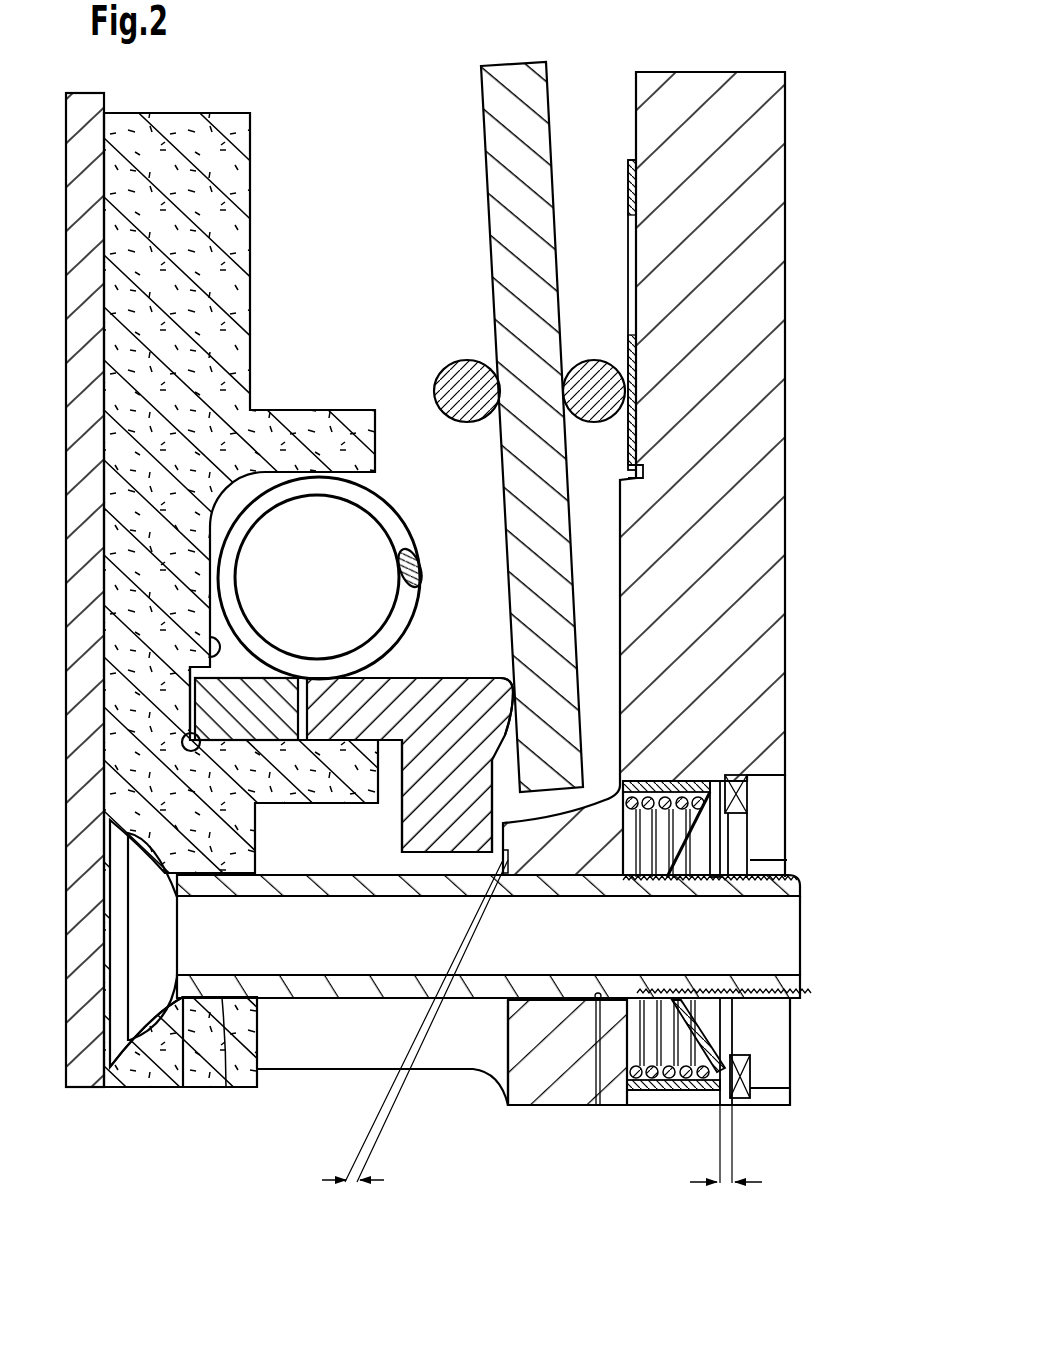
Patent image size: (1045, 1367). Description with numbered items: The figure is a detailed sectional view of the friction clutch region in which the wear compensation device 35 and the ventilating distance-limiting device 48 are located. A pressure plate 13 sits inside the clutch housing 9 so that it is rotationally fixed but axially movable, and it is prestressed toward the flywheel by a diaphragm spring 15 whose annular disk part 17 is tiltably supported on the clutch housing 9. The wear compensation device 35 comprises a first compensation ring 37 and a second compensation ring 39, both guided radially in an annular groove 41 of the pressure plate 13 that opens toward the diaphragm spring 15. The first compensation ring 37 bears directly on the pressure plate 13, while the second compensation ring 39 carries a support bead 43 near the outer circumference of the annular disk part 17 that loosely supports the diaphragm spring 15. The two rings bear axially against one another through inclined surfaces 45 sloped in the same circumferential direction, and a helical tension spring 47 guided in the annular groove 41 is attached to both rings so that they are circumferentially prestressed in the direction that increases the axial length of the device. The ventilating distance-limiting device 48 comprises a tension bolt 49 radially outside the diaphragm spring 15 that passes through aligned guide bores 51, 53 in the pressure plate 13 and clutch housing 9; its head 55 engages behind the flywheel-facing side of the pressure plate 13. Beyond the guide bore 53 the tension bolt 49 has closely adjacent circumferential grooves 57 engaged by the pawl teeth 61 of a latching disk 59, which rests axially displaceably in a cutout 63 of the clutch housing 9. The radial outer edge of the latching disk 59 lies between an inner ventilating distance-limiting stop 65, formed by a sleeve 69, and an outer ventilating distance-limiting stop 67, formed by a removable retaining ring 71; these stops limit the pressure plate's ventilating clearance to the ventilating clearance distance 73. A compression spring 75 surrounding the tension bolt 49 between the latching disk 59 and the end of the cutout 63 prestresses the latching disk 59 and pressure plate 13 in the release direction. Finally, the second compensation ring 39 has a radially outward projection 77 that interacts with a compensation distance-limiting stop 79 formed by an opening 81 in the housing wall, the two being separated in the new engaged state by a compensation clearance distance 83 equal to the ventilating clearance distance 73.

The clutch housing 9 is at (768, 302).
The pressure plate 13 is at (240, 195).
The diaphragm spring 15 is at (452, 284).
The annular disk part 17 is at (527, 581).
The wear compensation device 35 is at (438, 542).
The first compensation ring 37 is at (243, 698).
The second compensation ring 39 is at (442, 702).
The annular groove 41 is at (210, 630).
The support bead 43 is at (490, 700).
The inclined surfaces 45 is at (398, 678).
The tension spring 47 is at (386, 516).
The ventilating distance-limiting device 48 is at (812, 847).
The tension bolt 49 is at (325, 997).
The guide bore 51 is at (225, 1085).
The guide bore 53 is at (597, 1000).
The head 55 is at (140, 1045).
The circumferential grooves 57 is at (795, 890).
The latching disk 59 is at (752, 1062).
The pawl teeth 61 is at (762, 860).
The cutout 63 is at (749, 790).
The inner ventilating distance-limiting stop 65 is at (692, 800).
The outer ventilating distance-limiting stop 67 is at (718, 790).
The sleeve 69 is at (662, 790).
The retaining ring 71 is at (760, 808).
The ventilating clearance distance 73 is at (727, 1186).
The compression spring 75 is at (667, 1090).
The projection 77 is at (403, 836).
The compensation distance-limiting stop 79 is at (493, 1000).
The opening 81 is at (277, 848).
The compensation clearance distance 83 is at (352, 1184).